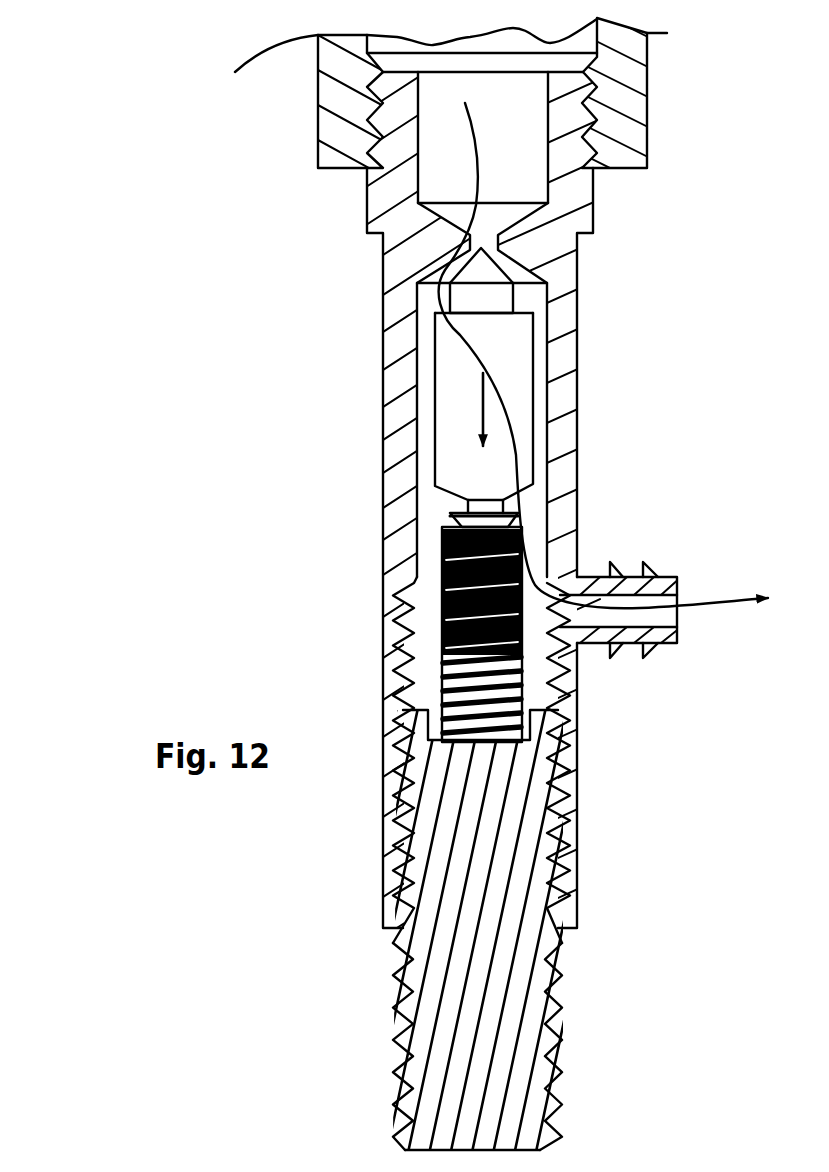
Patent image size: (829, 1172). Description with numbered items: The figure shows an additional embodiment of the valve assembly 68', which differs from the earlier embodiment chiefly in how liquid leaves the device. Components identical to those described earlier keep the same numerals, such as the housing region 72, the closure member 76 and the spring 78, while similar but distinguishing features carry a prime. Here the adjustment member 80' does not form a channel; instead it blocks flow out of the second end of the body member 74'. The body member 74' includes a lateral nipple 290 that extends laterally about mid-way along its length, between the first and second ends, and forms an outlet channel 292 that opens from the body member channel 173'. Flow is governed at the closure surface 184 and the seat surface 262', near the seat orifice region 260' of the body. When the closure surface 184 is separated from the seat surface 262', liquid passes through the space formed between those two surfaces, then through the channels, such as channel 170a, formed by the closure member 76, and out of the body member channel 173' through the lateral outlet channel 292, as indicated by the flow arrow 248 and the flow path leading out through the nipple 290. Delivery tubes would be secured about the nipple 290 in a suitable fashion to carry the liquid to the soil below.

The valve assembly 68' is at (400, 575).
The housing 72 is at (648, 127).
The body member 74' is at (520, 503).
The closure member 76 is at (440, 391).
The spring 78 is at (442, 647).
The adjustment member 80' is at (458, 921).
The channel 170a is at (467, 472).
The body member channel 173' is at (335, 551).
The closure surface 184 is at (452, 265).
The flow arrow 248 is at (483, 412).
The valve seat orifice 260' is at (342, 195).
The seat surface 262' is at (594, 392).
The lateral nipple 290 is at (663, 577).
The outlet channel 292 is at (621, 624).